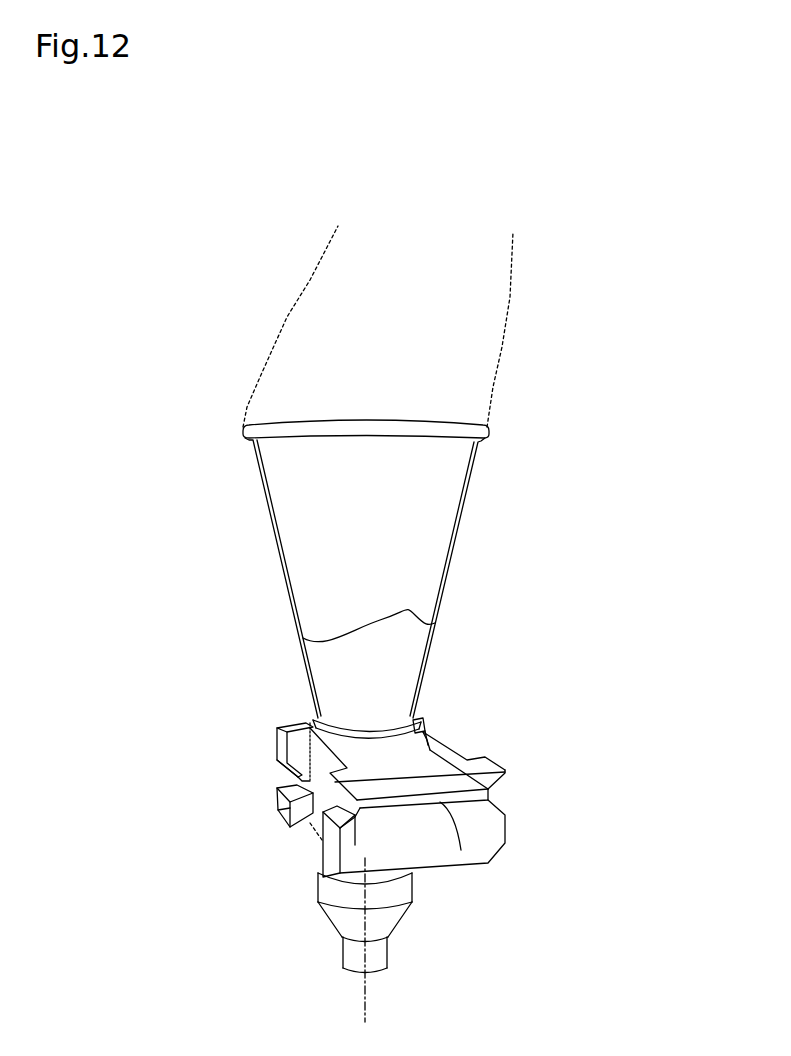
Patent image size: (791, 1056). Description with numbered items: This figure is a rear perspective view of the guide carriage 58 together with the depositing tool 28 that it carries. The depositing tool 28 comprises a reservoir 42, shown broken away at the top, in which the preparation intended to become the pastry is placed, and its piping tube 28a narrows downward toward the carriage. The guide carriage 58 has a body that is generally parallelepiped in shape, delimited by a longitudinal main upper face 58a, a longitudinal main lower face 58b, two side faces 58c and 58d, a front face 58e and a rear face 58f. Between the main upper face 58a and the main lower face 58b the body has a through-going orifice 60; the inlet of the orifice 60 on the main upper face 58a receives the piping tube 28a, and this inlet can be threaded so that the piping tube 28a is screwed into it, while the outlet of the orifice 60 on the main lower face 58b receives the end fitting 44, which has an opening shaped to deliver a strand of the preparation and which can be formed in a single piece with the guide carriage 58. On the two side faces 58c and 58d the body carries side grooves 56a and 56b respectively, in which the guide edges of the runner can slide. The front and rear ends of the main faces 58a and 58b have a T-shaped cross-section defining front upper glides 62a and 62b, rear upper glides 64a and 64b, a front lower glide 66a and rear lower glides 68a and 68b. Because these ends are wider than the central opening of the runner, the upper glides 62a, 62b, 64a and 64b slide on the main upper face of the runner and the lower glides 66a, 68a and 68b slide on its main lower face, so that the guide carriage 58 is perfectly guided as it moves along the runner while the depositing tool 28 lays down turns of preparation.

The reservoir 42 is at (490, 297).
The depositing tool 28 is at (237, 478).
The piping tube 28a is at (426, 622).
The through-going orifice 60 is at (311, 712).
The guide carriage 58 is at (577, 677).
The longitudinal main upper face 58a is at (427, 740).
The longitudinal main lower face 58b is at (313, 841).
The side face 58c is at (320, 815).
The side face 58d is at (458, 743).
The front face 58e is at (289, 713).
The rear face 58f is at (440, 802).
The front upper glide 62a is at (277, 766).
The front upper glide 62b is at (425, 750).
The side groove 56a is at (298, 780).
The side groove 56b is at (488, 797).
The rear upper glide 64a is at (297, 780).
The rear upper glide 64b is at (500, 784).
The front lower glide 66a is at (290, 797).
The rear lower glide 68a is at (327, 823).
The rear lower glide 68b is at (498, 810).
The end fitting 44 is at (377, 920).